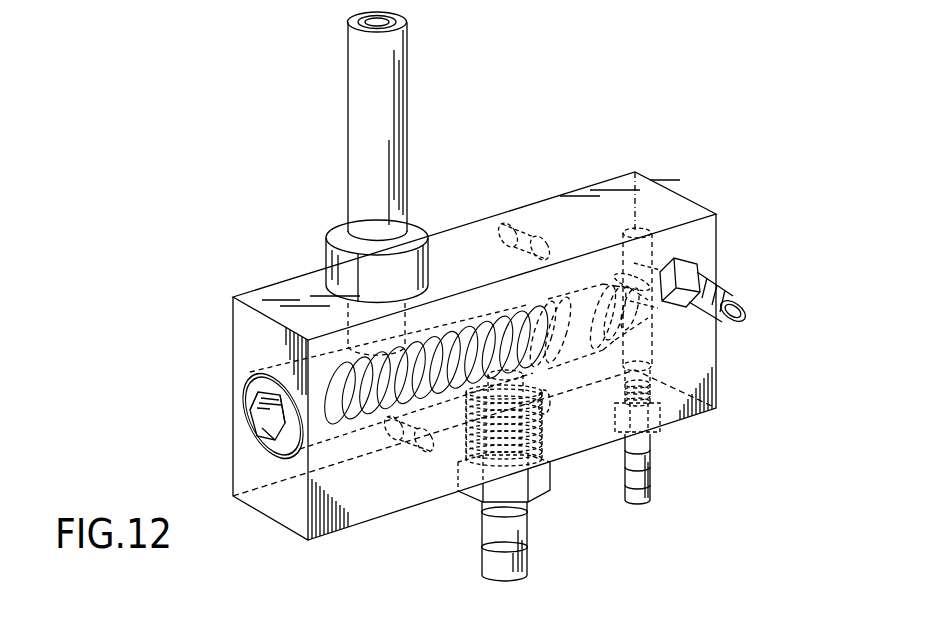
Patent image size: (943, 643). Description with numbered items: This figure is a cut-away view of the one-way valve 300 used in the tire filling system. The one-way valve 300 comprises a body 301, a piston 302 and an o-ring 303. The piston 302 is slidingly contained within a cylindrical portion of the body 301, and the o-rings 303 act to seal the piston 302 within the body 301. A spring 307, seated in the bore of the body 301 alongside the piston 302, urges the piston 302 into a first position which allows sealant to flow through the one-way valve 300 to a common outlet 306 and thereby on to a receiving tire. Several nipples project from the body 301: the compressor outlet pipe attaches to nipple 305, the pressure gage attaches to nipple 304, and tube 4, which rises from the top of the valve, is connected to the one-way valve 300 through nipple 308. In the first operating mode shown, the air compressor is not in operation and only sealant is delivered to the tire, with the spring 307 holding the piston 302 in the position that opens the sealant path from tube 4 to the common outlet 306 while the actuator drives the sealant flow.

The one-way valve 300 is at (190, 308).
The body 301 is at (707, 233).
The piston 302 is at (605, 302).
The o-ring 303 is at (578, 308).
The nipple 304 is at (743, 295).
The nipple 305 is at (652, 476).
The common outlet 306 is at (528, 565).
The spring 307 is at (372, 420).
The nipple 308 is at (328, 243).
The tube 4 is at (357, 123).